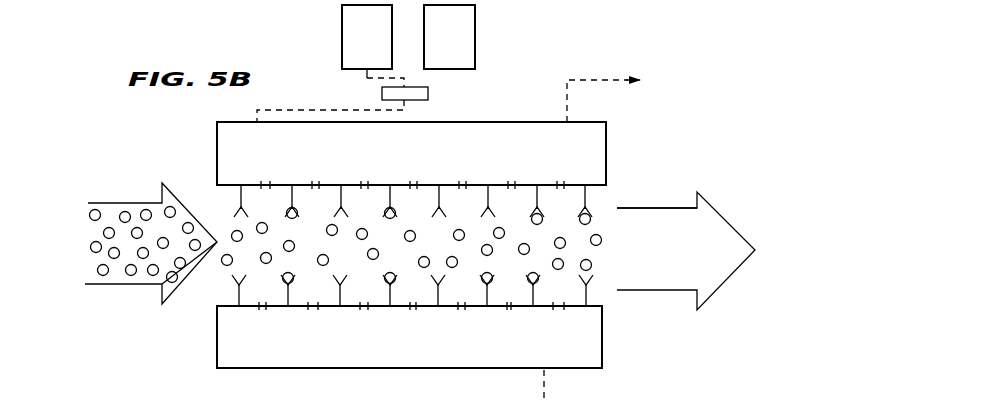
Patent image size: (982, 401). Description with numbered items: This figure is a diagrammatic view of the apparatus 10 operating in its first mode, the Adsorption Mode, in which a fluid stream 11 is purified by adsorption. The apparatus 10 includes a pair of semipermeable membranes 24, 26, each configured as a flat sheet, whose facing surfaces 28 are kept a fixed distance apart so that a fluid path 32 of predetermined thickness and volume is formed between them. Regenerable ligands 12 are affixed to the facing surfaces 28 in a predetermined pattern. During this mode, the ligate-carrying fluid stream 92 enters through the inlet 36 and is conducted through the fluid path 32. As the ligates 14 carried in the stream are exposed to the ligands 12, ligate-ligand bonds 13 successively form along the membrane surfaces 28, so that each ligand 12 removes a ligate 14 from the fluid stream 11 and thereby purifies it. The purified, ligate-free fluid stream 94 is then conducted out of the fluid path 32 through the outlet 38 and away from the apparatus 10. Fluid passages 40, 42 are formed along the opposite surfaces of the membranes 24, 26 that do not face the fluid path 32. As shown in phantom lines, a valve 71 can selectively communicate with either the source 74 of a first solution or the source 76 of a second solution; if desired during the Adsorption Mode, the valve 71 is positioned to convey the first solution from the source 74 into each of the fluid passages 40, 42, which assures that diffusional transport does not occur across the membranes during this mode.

The apparatus 10 is at (513, 90).
The fluid stream 11 is at (389, 252).
The ligand 12 is at (292, 187).
The chemical bond 13 is at (391, 187).
The ligate 14 is at (137, 228).
The semipermeable membrane 24 is at (225, 187).
The semipermeable membrane 26 is at (218, 306).
The facing surfaces 28 is at (492, 309).
The fluid path 32 is at (437, 252).
The inlet 36 is at (206, 281).
The outlet 38 is at (614, 202).
The fluid passage 40 is at (248, 150).
The fluid passage 42 is at (256, 342).
The valve 71 is at (428, 93).
The source of a first solution 74 is at (352, 28).
The source of a second solution 76 is at (467, 32).
The ligate-carrying fluid stream 92 is at (138, 284).
The ligate-free fluid stream 94 is at (655, 274).